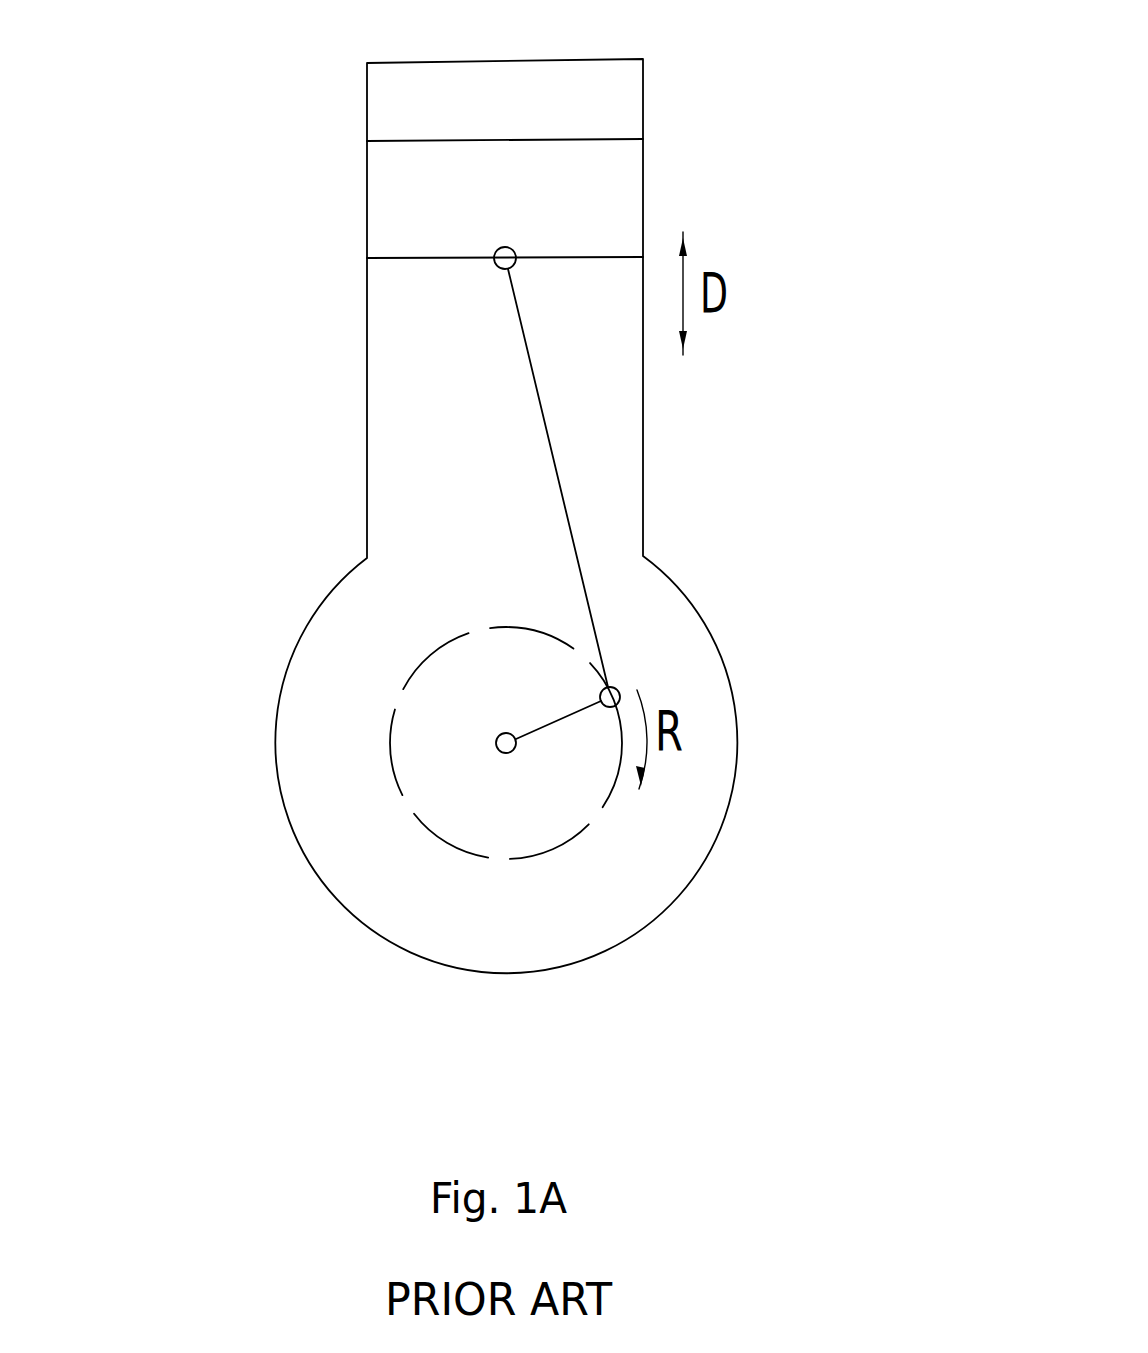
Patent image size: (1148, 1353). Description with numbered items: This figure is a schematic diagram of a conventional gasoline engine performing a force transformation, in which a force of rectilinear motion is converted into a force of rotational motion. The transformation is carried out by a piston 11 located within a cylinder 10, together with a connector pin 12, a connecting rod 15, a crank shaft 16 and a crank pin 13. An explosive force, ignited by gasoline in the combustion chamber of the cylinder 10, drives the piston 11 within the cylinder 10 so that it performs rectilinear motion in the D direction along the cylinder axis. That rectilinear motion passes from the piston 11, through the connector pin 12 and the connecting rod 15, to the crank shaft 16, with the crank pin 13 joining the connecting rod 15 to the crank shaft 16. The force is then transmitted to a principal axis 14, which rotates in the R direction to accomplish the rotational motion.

The cylinder 10 is at (413, 88).
The piston 11 is at (588, 208).
The connector pin 12 is at (496, 264).
The crank pin 13 is at (619, 689).
The principal axis 14 is at (498, 738).
The connecting rod 15 is at (560, 478).
The crank shaft 16 is at (560, 720).